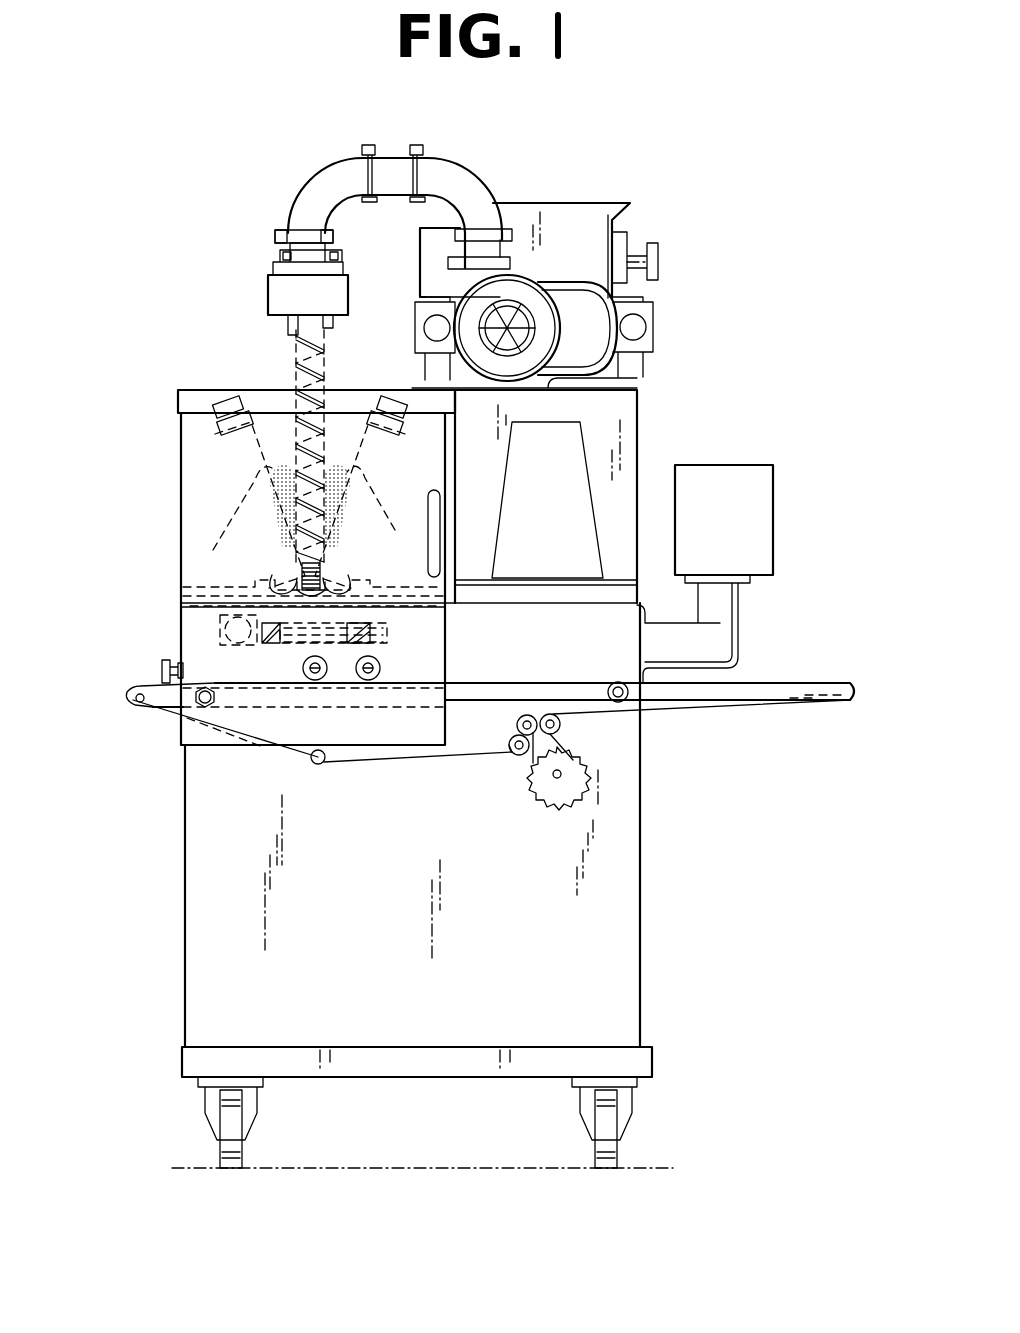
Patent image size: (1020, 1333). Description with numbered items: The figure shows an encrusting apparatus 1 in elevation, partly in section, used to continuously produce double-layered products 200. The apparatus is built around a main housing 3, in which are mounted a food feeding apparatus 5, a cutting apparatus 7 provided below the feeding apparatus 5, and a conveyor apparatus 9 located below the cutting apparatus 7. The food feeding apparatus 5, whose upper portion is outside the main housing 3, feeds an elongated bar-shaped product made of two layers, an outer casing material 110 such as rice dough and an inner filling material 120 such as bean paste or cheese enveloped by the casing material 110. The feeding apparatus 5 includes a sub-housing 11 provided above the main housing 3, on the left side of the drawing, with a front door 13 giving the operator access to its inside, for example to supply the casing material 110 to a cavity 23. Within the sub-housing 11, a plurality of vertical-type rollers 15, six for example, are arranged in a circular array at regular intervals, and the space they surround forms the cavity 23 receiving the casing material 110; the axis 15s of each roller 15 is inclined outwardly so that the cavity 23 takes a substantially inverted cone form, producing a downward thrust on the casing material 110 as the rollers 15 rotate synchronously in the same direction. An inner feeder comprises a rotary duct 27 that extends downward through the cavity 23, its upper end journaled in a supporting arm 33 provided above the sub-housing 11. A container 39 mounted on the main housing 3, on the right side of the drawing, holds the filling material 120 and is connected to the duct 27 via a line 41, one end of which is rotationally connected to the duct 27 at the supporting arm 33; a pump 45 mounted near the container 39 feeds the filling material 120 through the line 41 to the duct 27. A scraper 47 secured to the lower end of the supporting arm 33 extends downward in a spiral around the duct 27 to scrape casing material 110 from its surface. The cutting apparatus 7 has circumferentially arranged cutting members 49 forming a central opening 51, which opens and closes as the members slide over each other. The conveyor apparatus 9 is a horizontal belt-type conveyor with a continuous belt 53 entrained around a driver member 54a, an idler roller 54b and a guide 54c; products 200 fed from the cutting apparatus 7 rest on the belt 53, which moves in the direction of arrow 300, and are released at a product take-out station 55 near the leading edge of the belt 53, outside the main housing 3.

The encrusting apparatus 1 is at (632, 190).
The main housing 3 is at (640, 893).
The food feeding apparatus 5 is at (214, 330).
The cutting apparatus 7 is at (214, 633).
The conveyor apparatus 9 is at (518, 678).
The sub-housing 11 is at (177, 404).
The front door 13 is at (180, 502).
The vertical-type rollers 15 is at (218, 458).
The axis of roller 15s is at (308, 523).
The cavity 23 is at (341, 443).
The rotary duct 27 is at (325, 352).
The supporting arm 33 is at (268, 295).
The container 39 is at (630, 213).
The line 41 is at (398, 205).
The pump 45 is at (530, 286).
The scraper 47 is at (295, 358).
The cutting members 49 is at (277, 638).
The central opening 51 is at (313, 638).
The continuous belt 53 is at (468, 683).
The product take-out station 55 is at (780, 684).
The driver member 54a is at (530, 797).
The idler roller 54b is at (318, 765).
The guide 54c is at (148, 705).
The casing material 110 is at (262, 462).
The filling material 120 is at (336, 578).
The double-layered products 200 is at (320, 680).
The arrow 300 is at (630, 672).